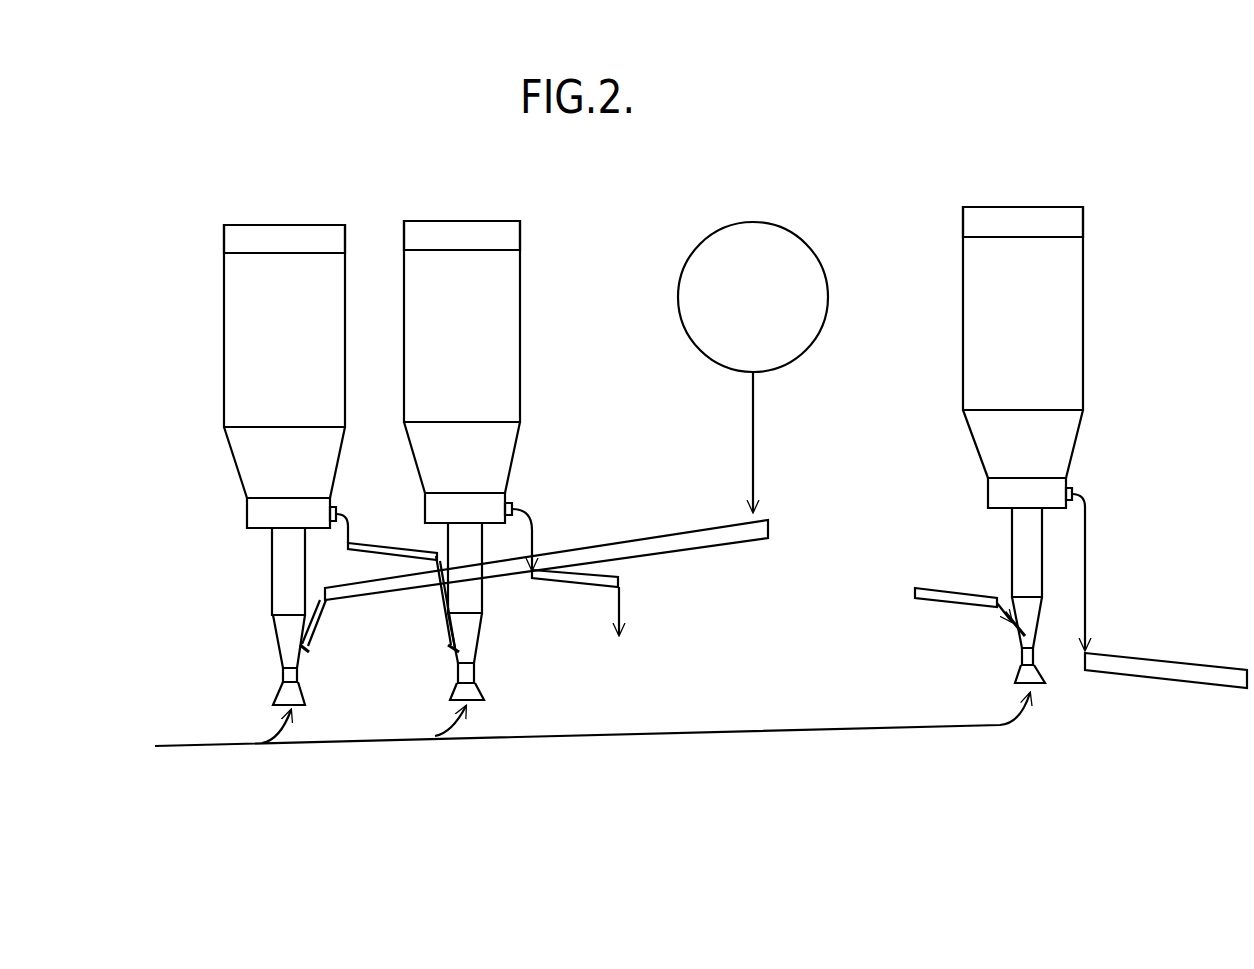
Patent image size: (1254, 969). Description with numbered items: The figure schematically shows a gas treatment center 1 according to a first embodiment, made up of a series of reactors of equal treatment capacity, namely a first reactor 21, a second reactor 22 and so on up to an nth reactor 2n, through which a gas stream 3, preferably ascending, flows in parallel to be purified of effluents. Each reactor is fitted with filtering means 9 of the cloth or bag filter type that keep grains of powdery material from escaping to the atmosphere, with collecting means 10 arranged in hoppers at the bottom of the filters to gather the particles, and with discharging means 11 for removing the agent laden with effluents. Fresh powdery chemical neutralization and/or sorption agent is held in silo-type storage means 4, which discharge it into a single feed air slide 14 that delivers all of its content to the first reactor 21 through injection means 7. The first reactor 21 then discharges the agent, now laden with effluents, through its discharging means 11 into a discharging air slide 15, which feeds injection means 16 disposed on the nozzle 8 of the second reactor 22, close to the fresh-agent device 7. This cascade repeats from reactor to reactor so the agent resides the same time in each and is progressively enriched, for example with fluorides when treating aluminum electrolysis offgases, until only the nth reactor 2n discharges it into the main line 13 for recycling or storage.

The gas treatment center 1 is at (1110, 203).
The first reactor 21 is at (248, 326).
The second reactor 22 is at (488, 313).
The nth reactor 2n is at (1052, 311).
The gas stream 3 is at (605, 735).
The storage means 4 is at (798, 232).
The injection means 7 is at (307, 653).
The nozzle 8 is at (275, 637).
The filtering means 9 is at (308, 251).
The collecting means 10 is at (278, 522).
The discharging means 11 is at (337, 497).
The main line 13 is at (1165, 670).
The feed air slide 14 is at (687, 530).
The discharging air slide 15 is at (395, 553).
The injection means 16 is at (455, 651).